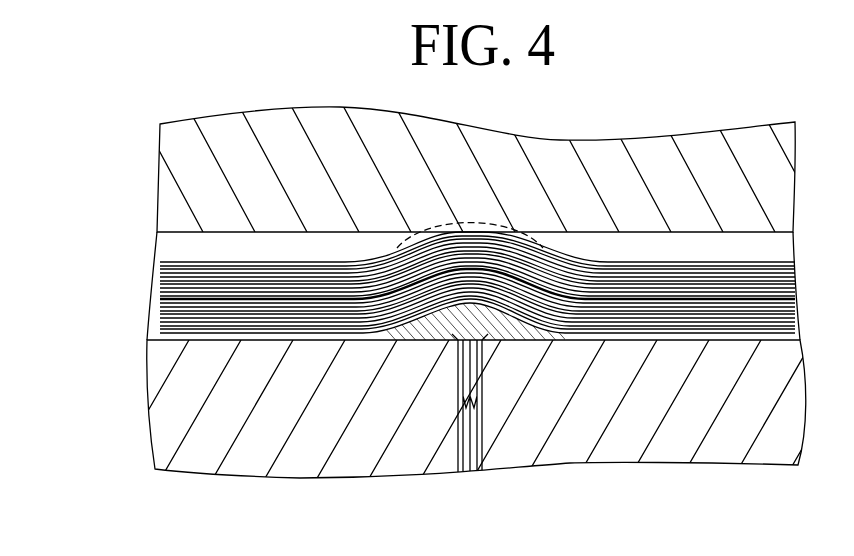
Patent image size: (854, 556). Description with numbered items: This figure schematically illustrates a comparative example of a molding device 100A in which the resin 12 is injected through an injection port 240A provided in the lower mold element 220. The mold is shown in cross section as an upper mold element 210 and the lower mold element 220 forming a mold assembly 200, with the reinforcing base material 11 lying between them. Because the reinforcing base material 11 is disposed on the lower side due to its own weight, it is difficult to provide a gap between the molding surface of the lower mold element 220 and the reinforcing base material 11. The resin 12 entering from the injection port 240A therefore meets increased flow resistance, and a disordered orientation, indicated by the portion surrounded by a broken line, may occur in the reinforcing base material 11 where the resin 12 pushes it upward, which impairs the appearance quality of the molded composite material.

The molding device 100A is at (126, 101).
The stacked structure 200 is at (82, 181).
The upper layer 210 is at (172, 216).
The lower mold element 220 is at (172, 411).
The reinforcing base material 11 is at (757, 305).
The resin 12 is at (423, 340).
The injection port 240A is at (495, 340).